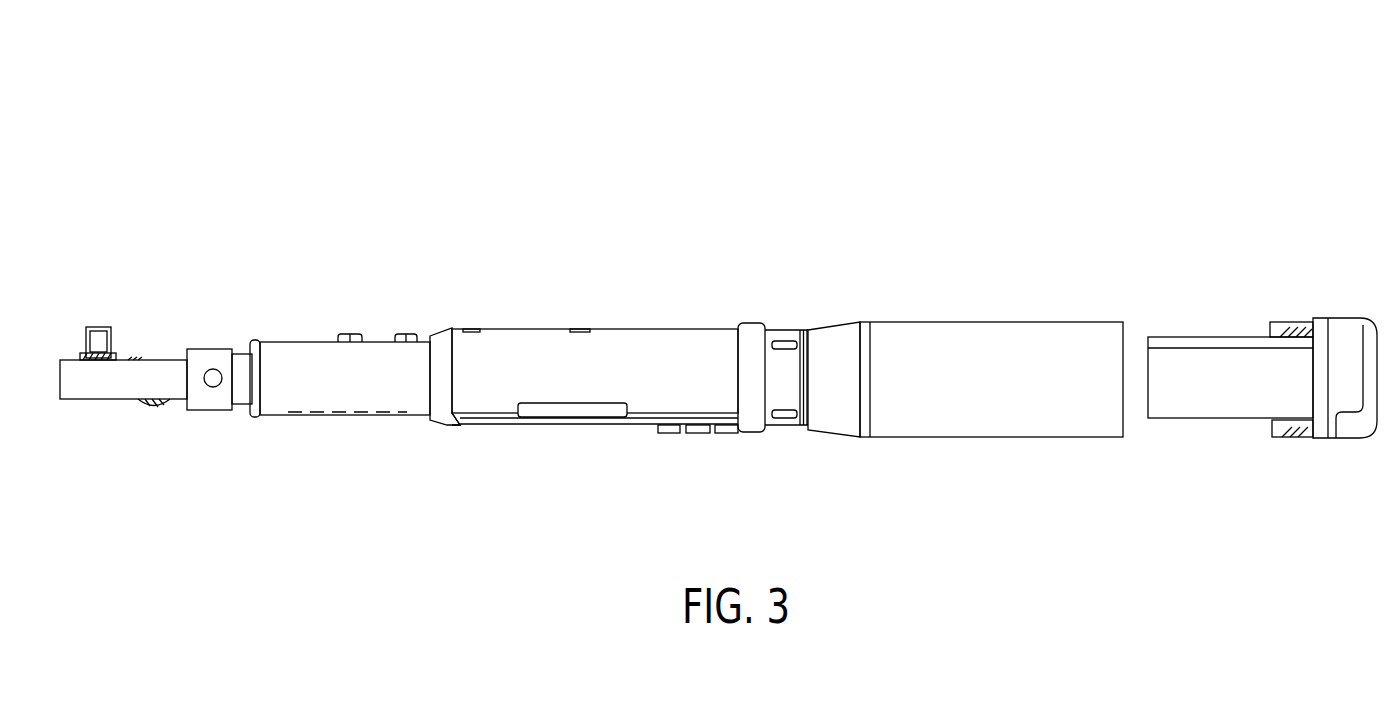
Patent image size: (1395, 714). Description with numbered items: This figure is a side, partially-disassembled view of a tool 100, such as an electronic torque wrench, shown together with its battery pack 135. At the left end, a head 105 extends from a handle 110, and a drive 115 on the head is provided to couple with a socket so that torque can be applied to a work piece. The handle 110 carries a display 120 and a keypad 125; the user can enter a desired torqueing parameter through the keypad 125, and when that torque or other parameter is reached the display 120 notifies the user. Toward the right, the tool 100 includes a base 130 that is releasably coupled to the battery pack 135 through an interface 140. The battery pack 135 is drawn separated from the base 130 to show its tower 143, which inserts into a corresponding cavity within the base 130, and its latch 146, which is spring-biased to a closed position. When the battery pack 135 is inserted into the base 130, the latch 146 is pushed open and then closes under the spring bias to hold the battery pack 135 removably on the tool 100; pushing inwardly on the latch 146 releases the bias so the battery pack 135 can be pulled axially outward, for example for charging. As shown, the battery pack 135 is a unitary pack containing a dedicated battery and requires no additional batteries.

The tool 100 is at (330, 121).
The head 105 is at (92, 402).
The handle 110 is at (686, 337).
The drive 115 is at (95, 338).
The display 120 is at (578, 410).
The keypad 125 is at (710, 433).
The base 130 is at (1048, 337).
The battery pack 135 is at (1340, 308).
The interface 140 is at (1276, 437).
The tower 143 is at (1173, 365).
The latch 146 is at (1275, 322).